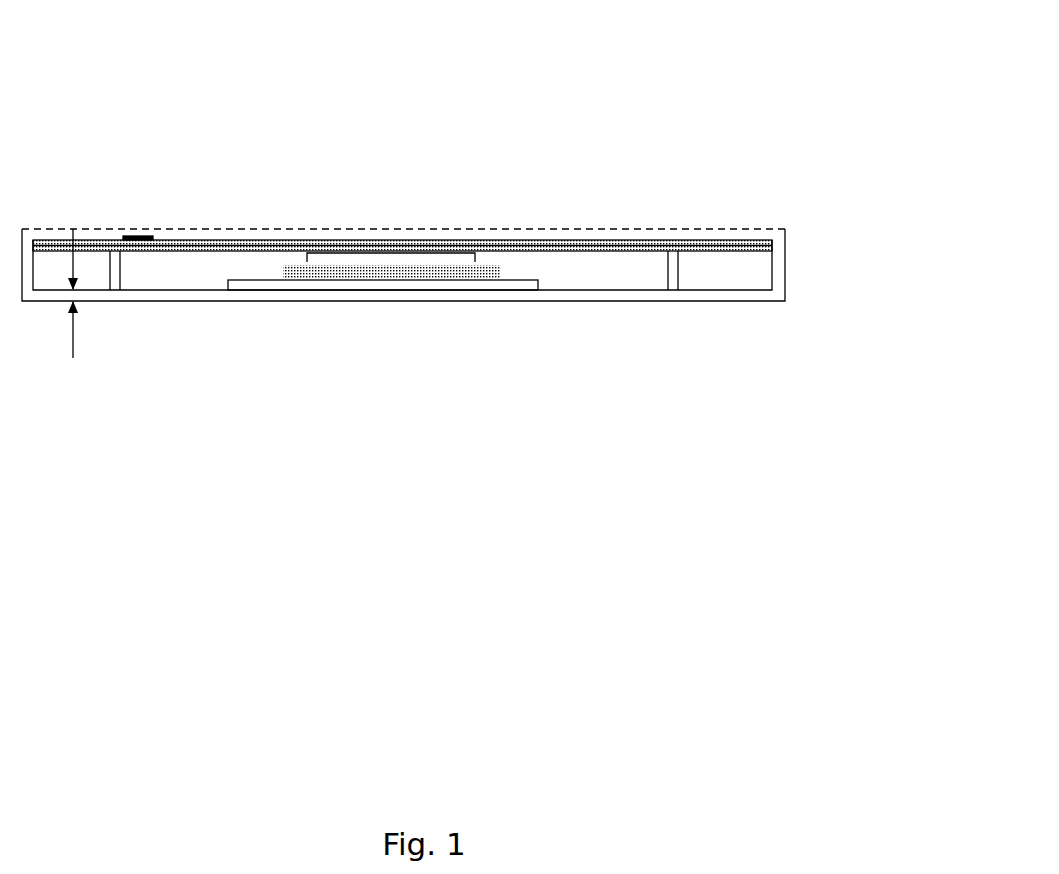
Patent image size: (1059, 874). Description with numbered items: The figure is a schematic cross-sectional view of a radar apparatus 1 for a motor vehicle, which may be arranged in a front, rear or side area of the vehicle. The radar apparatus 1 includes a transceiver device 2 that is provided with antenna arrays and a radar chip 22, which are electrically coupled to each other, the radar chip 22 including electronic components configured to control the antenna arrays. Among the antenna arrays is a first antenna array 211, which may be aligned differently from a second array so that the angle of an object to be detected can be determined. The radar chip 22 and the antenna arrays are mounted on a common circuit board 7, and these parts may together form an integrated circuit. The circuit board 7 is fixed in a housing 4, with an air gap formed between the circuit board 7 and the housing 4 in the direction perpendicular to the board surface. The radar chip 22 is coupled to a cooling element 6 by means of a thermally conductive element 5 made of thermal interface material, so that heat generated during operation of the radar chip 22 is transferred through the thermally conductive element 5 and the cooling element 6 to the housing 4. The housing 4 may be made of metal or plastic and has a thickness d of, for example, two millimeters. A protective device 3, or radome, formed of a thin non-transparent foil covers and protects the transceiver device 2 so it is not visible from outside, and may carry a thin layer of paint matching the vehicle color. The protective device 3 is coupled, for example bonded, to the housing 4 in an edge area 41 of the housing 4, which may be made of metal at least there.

The radar apparatus 1 is at (689, 90).
The transceiver device 2 is at (238, 162).
The first antenna array 211 is at (157, 227).
The radar chip 22 is at (430, 249).
The circuit board 7 is at (593, 236).
The protective device 3 is at (685, 218).
The edge area 41 is at (780, 228).
The housing 4 is at (779, 265).
The thermally conductive element 5 is at (350, 276).
The cooling element 6 is at (457, 292).
The thickness d is at (73, 312).